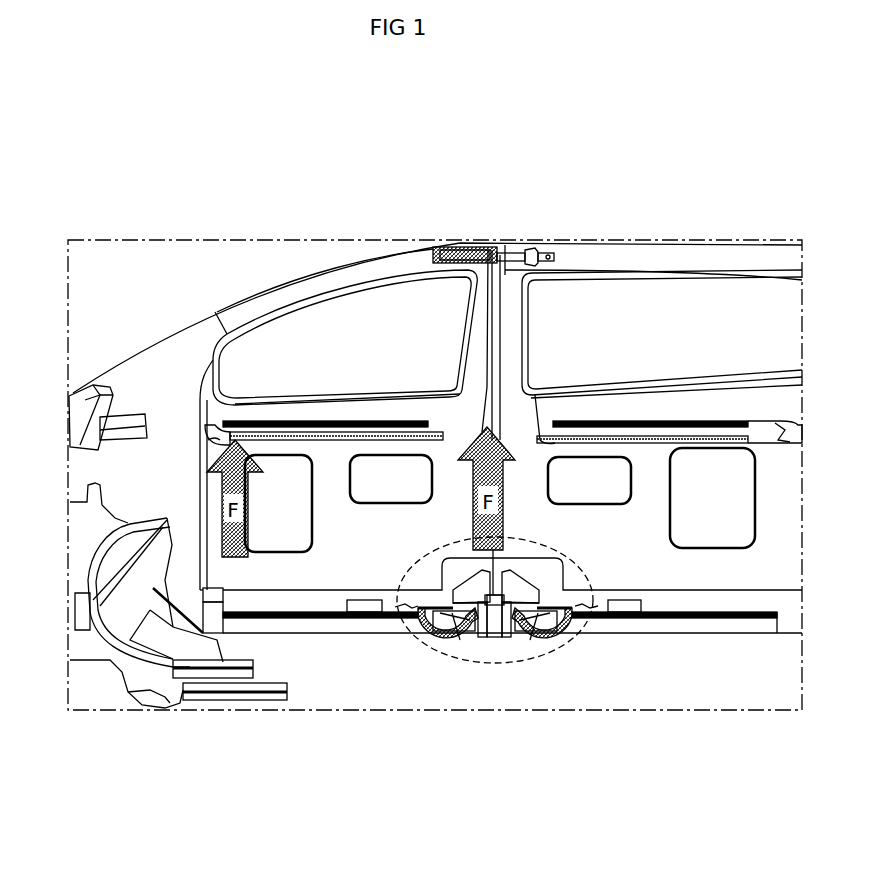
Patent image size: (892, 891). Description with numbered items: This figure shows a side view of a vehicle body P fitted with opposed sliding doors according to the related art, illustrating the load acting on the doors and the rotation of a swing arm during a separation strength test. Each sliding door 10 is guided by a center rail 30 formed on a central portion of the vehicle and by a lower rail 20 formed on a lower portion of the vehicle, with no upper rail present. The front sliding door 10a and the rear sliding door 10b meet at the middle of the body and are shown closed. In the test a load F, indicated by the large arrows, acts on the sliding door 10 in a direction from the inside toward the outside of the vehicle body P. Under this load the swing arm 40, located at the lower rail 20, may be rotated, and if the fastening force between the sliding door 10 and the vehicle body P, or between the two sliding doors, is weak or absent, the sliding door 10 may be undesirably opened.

The vehicle body P is at (160, 367).
The sliding door 10 is at (563, 165).
The front sliding door 10a is at (415, 413).
The rear sliding door 10b is at (560, 405).
The lower rail 20 is at (343, 633).
The center rail 30 is at (305, 430).
The swing arm 40 is at (472, 648).